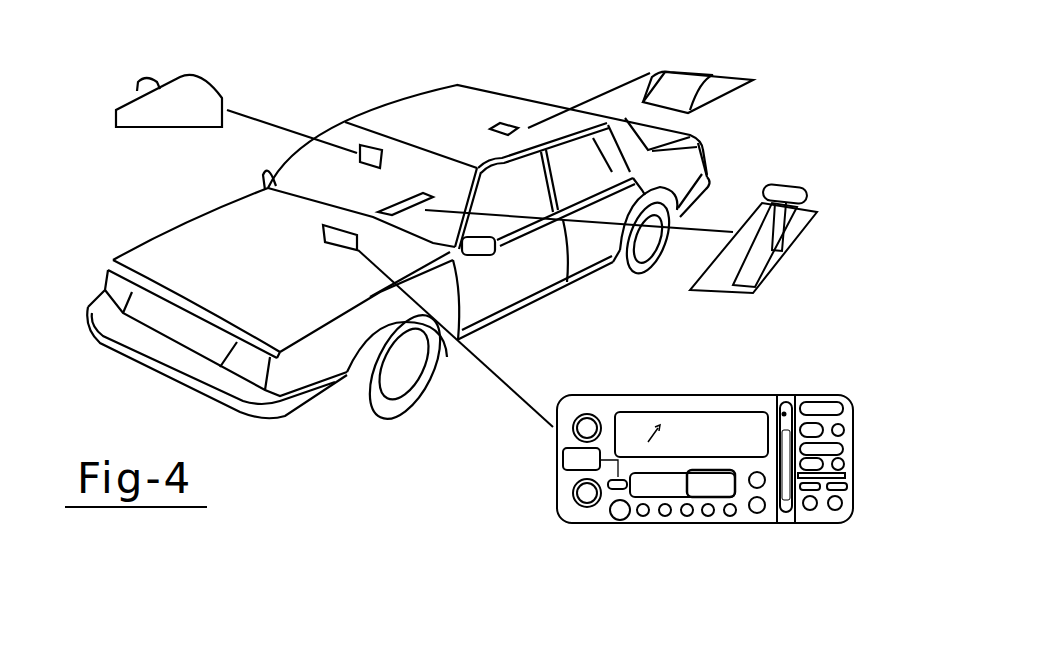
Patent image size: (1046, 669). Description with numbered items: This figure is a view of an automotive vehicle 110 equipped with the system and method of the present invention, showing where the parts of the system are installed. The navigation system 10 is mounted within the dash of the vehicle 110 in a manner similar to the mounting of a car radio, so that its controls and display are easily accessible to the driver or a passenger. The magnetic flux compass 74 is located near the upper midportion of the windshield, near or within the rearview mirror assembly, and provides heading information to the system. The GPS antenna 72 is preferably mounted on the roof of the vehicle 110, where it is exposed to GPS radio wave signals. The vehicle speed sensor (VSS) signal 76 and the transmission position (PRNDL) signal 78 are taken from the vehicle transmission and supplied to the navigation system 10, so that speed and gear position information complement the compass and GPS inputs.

The automotive vehicle 110 is at (85, 254).
The magnetic flux compass 74 is at (197, 90).
The GPS antenna 72 is at (683, 82).
The transmission position (PRNDL) signal 78 is at (836, 204).
The vehicle speed sensor (VSS) signal 76 is at (813, 280).
The navigation system 10 is at (662, 393).